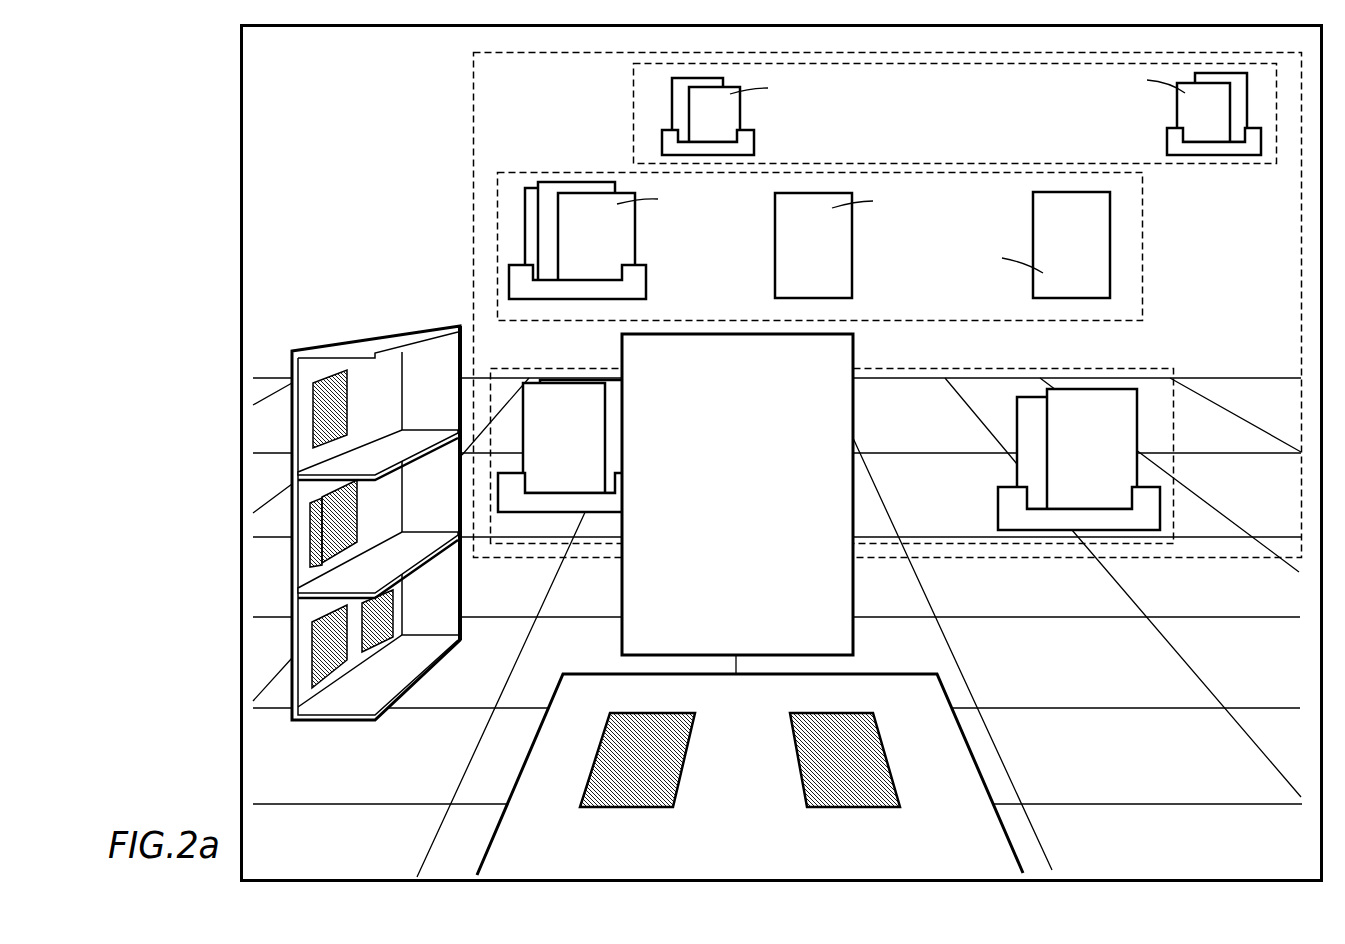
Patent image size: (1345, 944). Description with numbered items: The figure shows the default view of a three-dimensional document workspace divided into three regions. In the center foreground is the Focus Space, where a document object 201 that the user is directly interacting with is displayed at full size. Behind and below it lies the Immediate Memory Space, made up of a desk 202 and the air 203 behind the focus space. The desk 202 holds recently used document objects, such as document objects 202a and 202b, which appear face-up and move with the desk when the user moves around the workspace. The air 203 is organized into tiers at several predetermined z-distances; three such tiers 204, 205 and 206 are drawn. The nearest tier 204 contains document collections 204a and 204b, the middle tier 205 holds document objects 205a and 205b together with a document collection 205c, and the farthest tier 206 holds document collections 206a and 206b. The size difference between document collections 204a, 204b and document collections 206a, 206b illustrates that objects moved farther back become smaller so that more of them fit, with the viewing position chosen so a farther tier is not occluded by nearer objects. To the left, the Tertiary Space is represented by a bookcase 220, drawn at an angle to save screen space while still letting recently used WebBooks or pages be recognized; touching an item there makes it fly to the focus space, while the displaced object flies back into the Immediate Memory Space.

The document object 201 is at (737, 504).
The desk 202 is at (983, 779).
The document object 202a is at (845, 760).
The document object 202b is at (637, 760).
The air 203 is at (473, 138).
The tier 204 is at (1173, 425).
The document collection 204a is at (1079, 459).
The document collection 204b is at (569, 446).
The tier 205 is at (1142, 260).
The document object 205a is at (1015, 245).
The document object 205b is at (864, 242).
The document collection 205c is at (623, 238).
The tier 206 is at (633, 116).
The document collection 206a is at (1160, 109).
The document collection 206b is at (756, 114).
The bookcase 220 is at (383, 333).